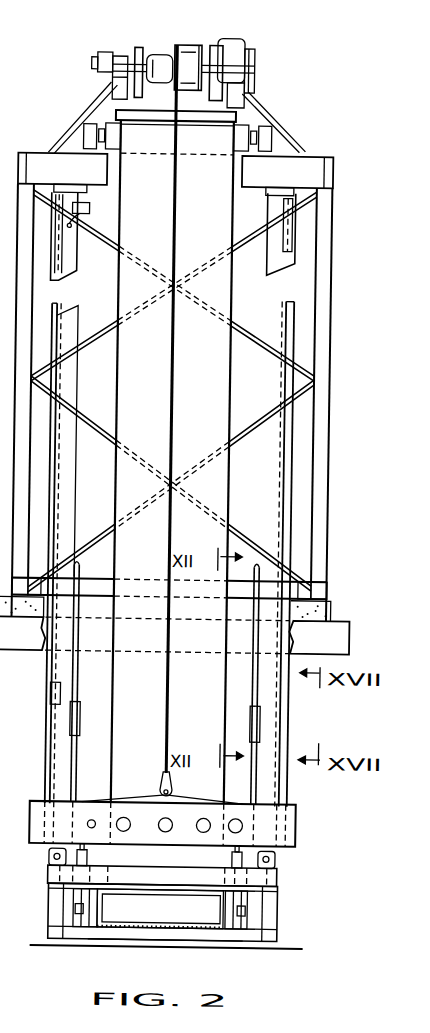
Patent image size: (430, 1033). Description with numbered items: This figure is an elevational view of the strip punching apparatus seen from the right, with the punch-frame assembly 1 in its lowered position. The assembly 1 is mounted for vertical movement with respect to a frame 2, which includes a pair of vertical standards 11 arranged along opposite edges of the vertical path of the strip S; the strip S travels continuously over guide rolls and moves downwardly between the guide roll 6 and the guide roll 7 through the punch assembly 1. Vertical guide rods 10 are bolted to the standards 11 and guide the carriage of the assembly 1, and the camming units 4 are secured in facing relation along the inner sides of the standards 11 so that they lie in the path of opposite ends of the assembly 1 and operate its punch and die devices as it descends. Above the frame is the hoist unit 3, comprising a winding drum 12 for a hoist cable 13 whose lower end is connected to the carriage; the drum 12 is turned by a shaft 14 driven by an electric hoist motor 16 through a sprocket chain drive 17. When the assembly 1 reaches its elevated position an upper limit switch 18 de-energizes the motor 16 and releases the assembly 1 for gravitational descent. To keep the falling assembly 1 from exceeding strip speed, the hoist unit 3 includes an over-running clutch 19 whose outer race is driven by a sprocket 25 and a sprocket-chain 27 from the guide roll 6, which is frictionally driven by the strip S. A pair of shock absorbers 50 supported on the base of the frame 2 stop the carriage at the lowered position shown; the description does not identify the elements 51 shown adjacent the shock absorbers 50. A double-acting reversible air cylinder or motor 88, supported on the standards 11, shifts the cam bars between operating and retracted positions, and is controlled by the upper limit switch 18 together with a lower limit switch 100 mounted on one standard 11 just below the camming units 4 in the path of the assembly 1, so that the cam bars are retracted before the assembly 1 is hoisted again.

The punch-frame assembly 1 is at (301, 803).
The frame 2 is at (328, 360).
The hoist unit 3 is at (149, 54).
The camming units 4 is at (82, 577).
The guide roll 6 is at (233, 117).
The guide roll 7 is at (104, 942).
The vertical guide rods 10 is at (55, 310).
The vertical standards 11 is at (50, 282).
The winding drum 12 is at (191, 45).
The hoist cable 13 is at (172, 398).
The shaft 14 is at (126, 63).
The electric hoist motor 16 is at (222, 43).
The sprocket chain drive 17 is at (249, 54).
The limit switch 18 is at (86, 210).
The over-running clutch 19 is at (100, 53).
The sprocket 25 is at (97, 56).
The sprocket-chain 27 is at (102, 86).
The shock absorbers 50 is at (80, 899).
The hanger 51 is at (94, 849).
The double-acting reversible air cylinder or motor 88 is at (84, 742).
The lower limit switch 100 is at (52, 707).
The strip S is at (230, 363).